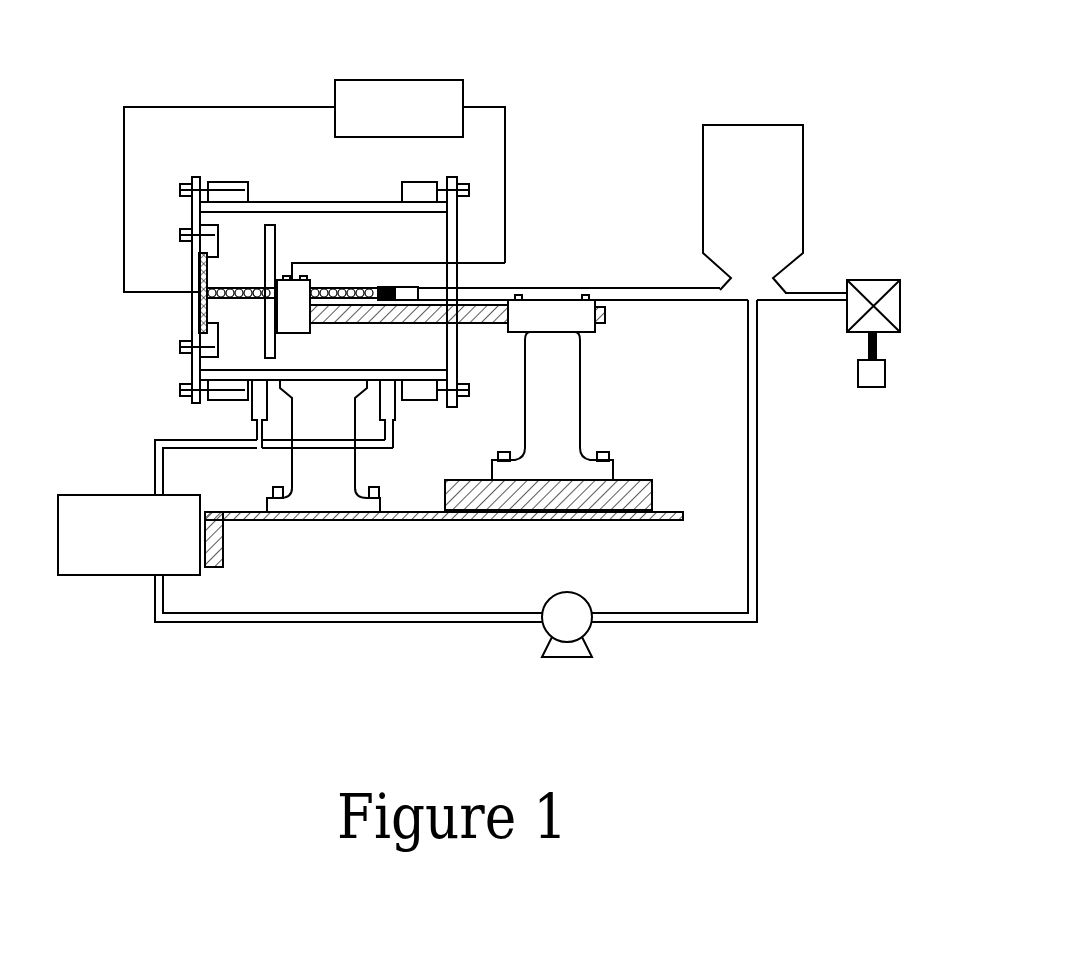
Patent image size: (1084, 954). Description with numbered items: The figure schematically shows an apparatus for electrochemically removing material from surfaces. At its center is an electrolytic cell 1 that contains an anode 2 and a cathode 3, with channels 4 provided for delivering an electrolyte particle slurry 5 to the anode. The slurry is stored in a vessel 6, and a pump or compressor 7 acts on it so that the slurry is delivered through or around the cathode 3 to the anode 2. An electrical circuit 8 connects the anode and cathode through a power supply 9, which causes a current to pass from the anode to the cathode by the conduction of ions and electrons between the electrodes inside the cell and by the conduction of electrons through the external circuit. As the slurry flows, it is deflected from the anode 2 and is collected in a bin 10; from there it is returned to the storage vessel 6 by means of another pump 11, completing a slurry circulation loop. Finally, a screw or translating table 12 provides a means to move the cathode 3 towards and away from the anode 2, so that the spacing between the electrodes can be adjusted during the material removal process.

The electrolytic cell 1 is at (198, 368).
The anode 2 is at (199, 266).
The cathode 3 is at (238, 292).
The channels 4 is at (205, 302).
The electrolyte particle slurry 5 is at (210, 293).
The vessel 6 is at (778, 150).
The pump or compressor 7 is at (888, 305).
The electrical circuit 8 is at (506, 150).
The power supply 9 is at (400, 96).
The bin 10 is at (132, 514).
The pump 11 is at (570, 620).
The screw or translating table 12 is at (592, 497).